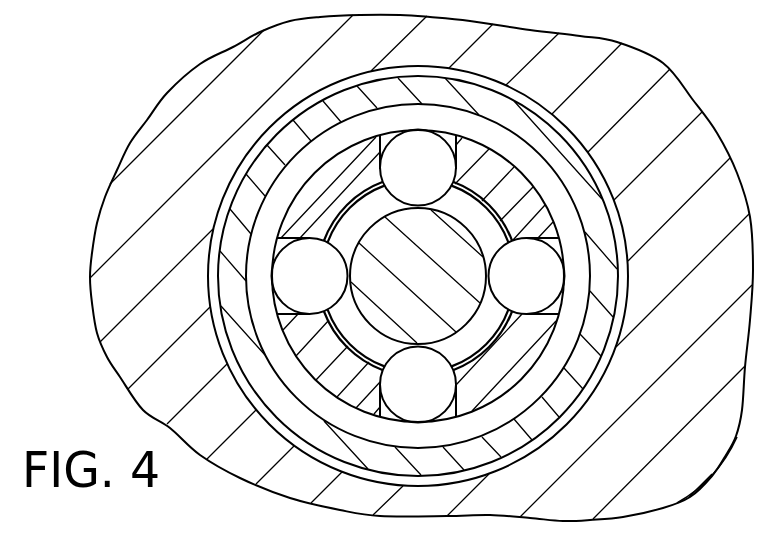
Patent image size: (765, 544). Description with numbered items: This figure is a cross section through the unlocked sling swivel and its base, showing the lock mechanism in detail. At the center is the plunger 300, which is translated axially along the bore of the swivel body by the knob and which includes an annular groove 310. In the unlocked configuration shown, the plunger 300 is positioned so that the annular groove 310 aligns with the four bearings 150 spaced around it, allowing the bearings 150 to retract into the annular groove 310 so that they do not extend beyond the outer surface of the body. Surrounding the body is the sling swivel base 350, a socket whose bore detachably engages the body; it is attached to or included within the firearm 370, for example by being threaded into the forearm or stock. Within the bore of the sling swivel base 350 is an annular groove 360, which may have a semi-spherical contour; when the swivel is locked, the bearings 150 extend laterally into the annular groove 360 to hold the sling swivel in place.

The bearings 150 is at (290, 283).
The plunger 300 is at (517, 193).
The annular groove 310 is at (352, 212).
The sling swivel base 350 is at (578, 412).
The annular groove 360 is at (600, 272).
The firearm 370 is at (196, 108).